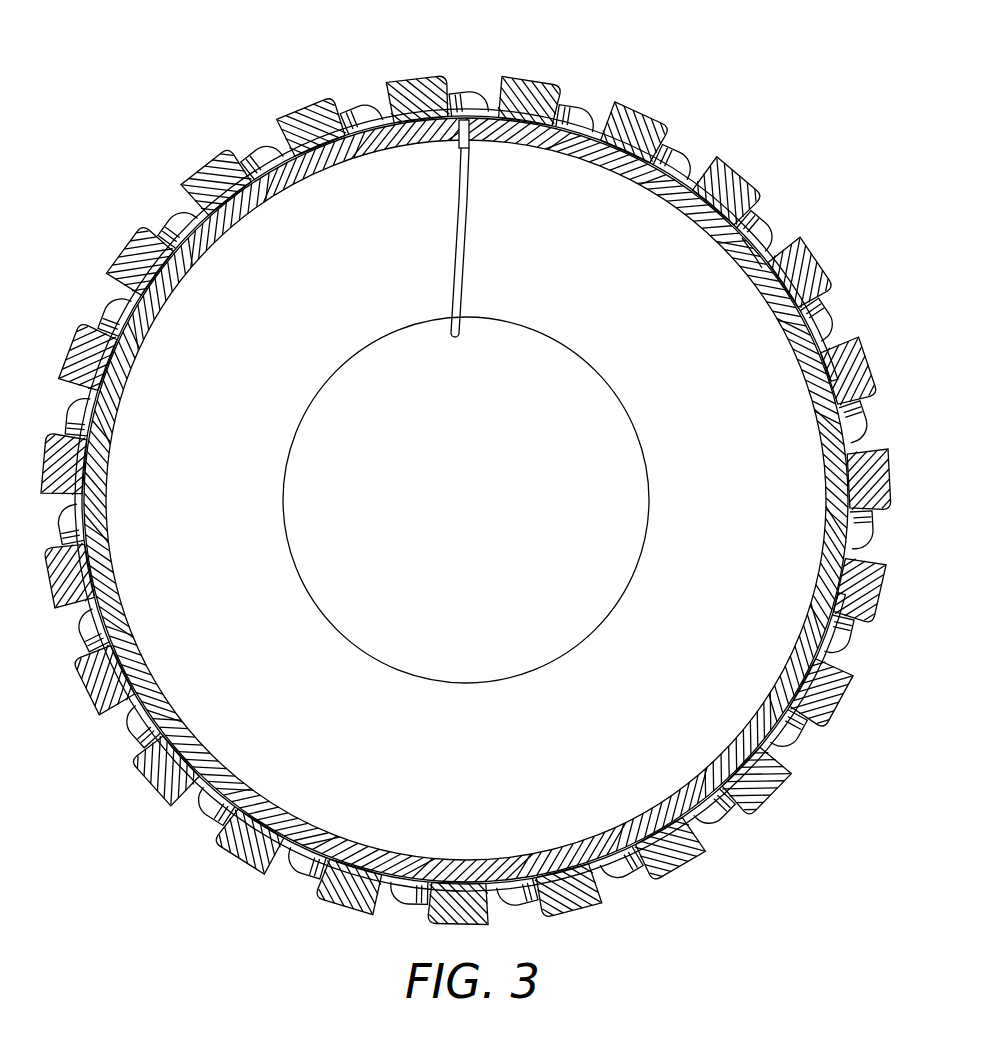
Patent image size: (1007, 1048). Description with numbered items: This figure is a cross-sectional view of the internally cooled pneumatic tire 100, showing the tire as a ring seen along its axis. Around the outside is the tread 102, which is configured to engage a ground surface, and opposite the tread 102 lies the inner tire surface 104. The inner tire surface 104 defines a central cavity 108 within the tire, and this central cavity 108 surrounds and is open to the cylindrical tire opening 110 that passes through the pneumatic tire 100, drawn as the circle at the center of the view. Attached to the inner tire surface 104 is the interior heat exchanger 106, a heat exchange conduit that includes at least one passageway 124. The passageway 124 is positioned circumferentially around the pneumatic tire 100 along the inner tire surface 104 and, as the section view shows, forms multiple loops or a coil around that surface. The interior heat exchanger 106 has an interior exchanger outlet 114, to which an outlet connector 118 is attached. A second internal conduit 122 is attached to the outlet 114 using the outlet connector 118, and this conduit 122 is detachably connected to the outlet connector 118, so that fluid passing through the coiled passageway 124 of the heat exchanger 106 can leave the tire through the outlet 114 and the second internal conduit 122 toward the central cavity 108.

The pneumatic tire 100 is at (824, 86).
The tread 102 is at (745, 176).
The inner tire surface 104 is at (765, 265).
The interior heat exchanger 106 is at (490, 123).
The central cavity 108 is at (795, 498).
The cylindrical tire opening 110 is at (465, 492).
The interior exchanger outlet 114 is at (466, 128).
The outlet connector 118 is at (462, 142).
The second internal conduit 122 is at (450, 258).
The passageway 124 is at (196, 206).